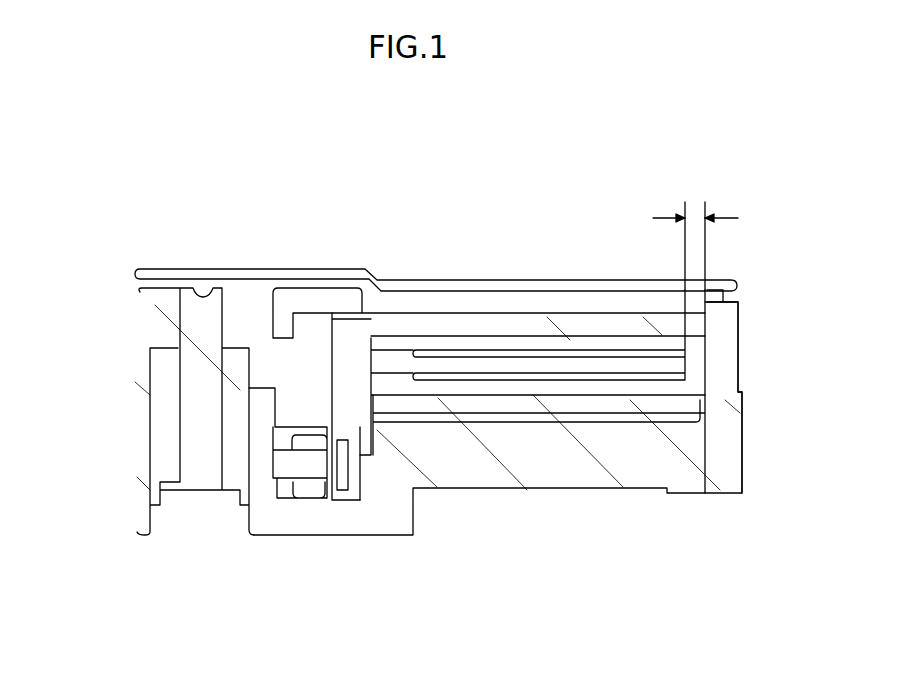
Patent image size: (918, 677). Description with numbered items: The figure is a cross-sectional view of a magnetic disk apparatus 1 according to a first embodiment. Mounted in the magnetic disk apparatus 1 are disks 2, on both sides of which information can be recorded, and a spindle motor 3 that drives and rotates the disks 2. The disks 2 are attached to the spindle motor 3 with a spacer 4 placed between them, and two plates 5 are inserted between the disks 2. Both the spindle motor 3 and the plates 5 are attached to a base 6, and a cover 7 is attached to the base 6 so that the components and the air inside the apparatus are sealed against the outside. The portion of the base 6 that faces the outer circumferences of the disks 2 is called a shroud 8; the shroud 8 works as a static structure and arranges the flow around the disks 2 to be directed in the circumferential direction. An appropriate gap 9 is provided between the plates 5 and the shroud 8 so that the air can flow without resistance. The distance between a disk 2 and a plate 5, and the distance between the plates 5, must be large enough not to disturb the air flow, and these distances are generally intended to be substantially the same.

The magnetic disk apparatus 1 is at (332, 388).
The disks 2 is at (410, 322).
The spindle motor 3 is at (196, 335).
The spacer 4 is at (343, 368).
The plates 5 is at (490, 357).
The base 6 is at (655, 457).
The cover 7 is at (616, 282).
The shroud 8 is at (708, 360).
The gap 9 is at (695, 225).